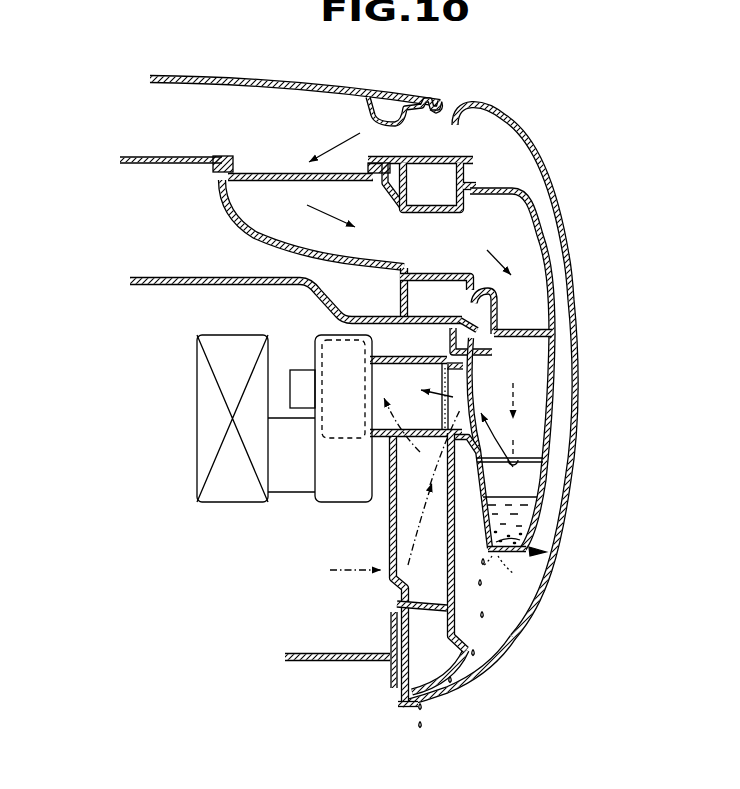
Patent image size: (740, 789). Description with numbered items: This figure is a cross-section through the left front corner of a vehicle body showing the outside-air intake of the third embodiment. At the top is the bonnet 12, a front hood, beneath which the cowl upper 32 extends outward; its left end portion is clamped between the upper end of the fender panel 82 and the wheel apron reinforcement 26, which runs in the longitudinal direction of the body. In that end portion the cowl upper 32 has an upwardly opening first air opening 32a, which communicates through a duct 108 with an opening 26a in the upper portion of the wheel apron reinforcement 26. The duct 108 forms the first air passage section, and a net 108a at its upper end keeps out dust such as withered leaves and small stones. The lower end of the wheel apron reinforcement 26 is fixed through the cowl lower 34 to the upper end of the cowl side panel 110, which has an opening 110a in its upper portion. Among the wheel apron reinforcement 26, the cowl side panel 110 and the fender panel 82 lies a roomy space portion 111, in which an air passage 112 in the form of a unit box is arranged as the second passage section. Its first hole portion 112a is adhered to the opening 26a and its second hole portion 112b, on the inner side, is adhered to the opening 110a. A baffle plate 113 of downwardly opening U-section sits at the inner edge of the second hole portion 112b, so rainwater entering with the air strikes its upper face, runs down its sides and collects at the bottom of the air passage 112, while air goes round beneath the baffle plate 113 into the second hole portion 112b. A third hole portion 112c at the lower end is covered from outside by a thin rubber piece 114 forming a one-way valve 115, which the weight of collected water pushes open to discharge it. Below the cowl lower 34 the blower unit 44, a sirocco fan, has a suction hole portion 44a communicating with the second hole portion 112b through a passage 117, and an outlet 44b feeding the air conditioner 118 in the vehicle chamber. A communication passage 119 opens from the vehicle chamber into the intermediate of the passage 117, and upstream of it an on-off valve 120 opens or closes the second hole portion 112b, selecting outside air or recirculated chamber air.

The bonnet 12 is at (275, 77).
The wheel apron reinforcement 26 is at (471, 149).
The opening 26a is at (450, 212).
The cowl upper 32 is at (153, 157).
The first air opening 32a is at (232, 156).
The cowl lower 34 is at (158, 278).
The blower unit 44 is at (330, 348).
The suction hole portion 44a is at (373, 386).
The outlet 44b is at (310, 478).
The fender panel 82 is at (547, 177).
The duct 108 is at (243, 228).
The net 108a is at (275, 172).
The cowl side panel 110 is at (455, 596).
The opening 110a is at (460, 383).
The space portion 111 is at (563, 413).
The air passage 112 is at (561, 289).
The first hole portion 112a is at (488, 289).
The second hole portion 112b is at (470, 437).
The third hole portion 112c is at (515, 540).
The baffle plate 113 is at (523, 331).
The rubber piece 114 is at (493, 557).
The one-way valve 115 is at (540, 552).
The passage 117 is at (417, 357).
The air conditioner 118 is at (236, 505).
The communication passage 119 is at (392, 585).
The on-off valve 120 is at (388, 508).